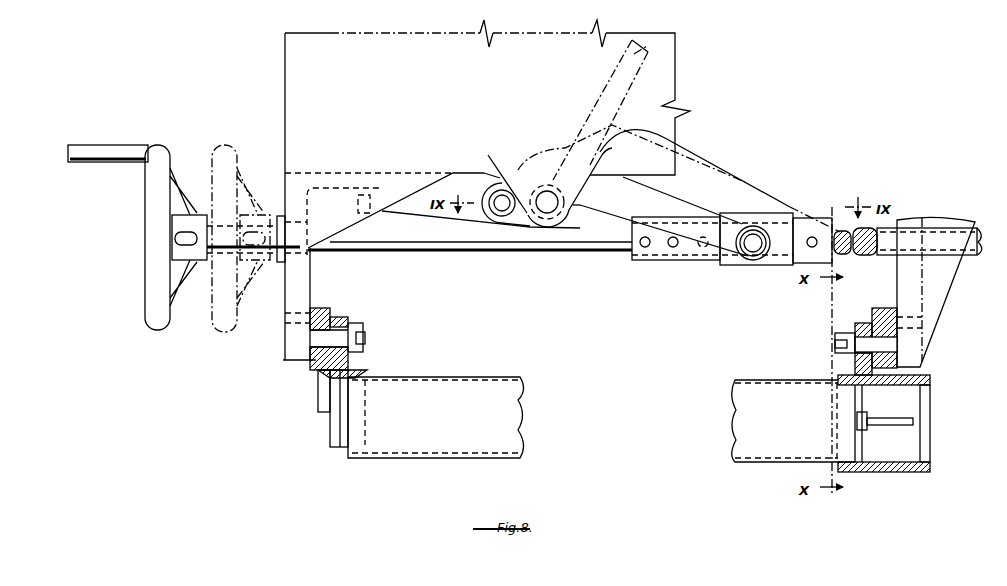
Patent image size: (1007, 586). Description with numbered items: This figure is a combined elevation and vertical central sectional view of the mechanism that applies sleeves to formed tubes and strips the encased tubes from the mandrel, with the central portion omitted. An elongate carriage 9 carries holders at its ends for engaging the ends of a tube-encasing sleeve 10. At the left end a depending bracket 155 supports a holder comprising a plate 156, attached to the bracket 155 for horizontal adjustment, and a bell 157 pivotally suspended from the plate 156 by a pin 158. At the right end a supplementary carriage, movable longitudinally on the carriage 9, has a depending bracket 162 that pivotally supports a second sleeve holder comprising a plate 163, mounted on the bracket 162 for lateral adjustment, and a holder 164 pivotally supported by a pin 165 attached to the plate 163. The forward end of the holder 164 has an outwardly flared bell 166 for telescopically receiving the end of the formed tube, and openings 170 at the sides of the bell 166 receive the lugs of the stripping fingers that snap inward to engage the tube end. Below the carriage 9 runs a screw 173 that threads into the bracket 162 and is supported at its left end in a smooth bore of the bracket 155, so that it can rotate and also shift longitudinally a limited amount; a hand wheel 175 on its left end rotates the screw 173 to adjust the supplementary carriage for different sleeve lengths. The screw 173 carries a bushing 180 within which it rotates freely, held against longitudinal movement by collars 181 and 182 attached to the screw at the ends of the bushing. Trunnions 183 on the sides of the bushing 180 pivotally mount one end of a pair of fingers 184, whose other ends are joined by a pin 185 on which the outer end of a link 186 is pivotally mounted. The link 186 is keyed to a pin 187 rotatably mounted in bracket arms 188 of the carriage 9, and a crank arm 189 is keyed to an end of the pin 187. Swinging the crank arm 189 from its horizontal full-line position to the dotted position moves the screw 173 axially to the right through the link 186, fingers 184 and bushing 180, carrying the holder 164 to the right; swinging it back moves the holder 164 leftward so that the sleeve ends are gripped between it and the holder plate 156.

The carriage 9 is at (285, 76).
The sleeve 10 is at (444, 387).
The depending bracket 155 is at (285, 349).
The plate 156 is at (320, 310).
The bell 157 is at (318, 370).
The pin 158 is at (364, 333).
The depending bracket 162 is at (926, 341).
The plate 163 is at (880, 308).
The holder 164 is at (856, 325).
The pin 165 is at (835, 346).
The bell 166 is at (885, 472).
The opening 170 is at (900, 413).
The screw 173 is at (569, 248).
The hand wheel 175 is at (148, 310).
The bushing 180 is at (733, 268).
The collar 181 is at (805, 226).
The collar 182 is at (668, 259).
The trunnion 183 is at (757, 249).
The fingers 184 is at (678, 203).
The pin 185 is at (503, 217).
The link 186 is at (525, 221).
The pin 187 is at (538, 186).
The bracket arms 188 is at (580, 222).
The crank arm 189 is at (630, 91).